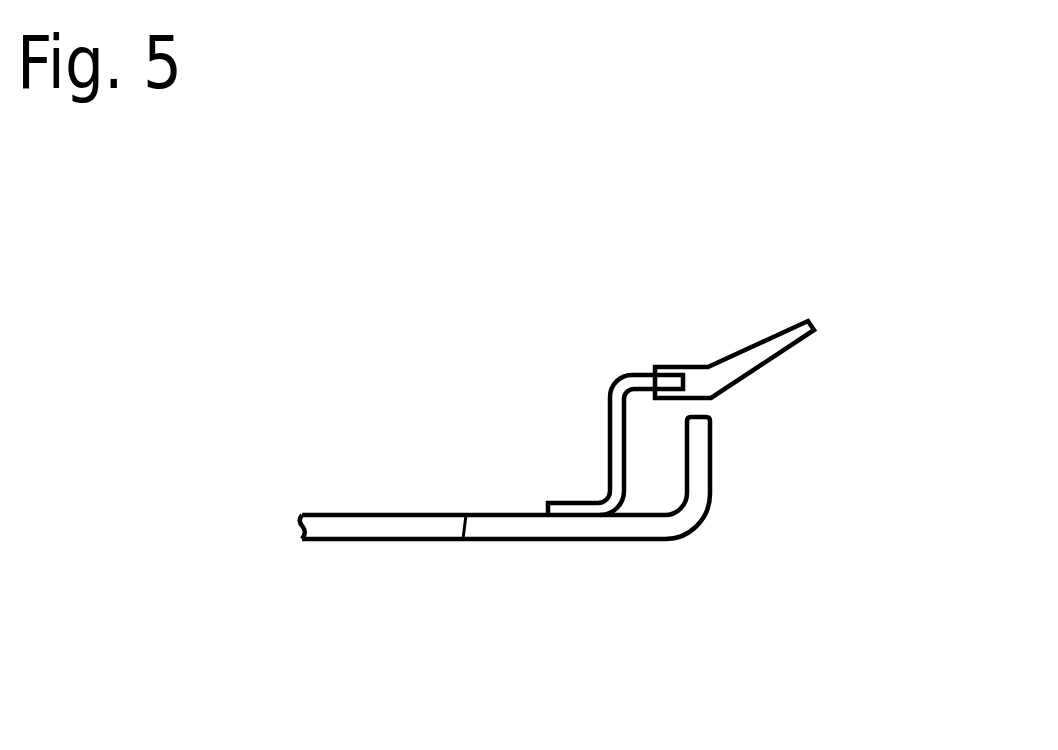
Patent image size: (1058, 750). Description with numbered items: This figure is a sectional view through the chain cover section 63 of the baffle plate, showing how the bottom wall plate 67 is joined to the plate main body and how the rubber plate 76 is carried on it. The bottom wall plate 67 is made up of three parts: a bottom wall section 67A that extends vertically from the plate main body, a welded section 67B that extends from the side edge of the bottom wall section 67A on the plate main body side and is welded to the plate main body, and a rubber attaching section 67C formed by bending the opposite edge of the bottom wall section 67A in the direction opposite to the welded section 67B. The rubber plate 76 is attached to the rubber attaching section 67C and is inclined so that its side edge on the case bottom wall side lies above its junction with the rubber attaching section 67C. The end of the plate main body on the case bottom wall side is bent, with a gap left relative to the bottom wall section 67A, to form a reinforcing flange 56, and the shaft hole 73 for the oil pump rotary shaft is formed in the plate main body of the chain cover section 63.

The reinforcing flange 56 is at (698, 477).
The chain cover section 63 is at (545, 539).
The bottom wall plate 67 is at (548, 339).
The bottom wall section 67A is at (608, 430).
The welded section 67B is at (567, 502).
The rubber attaching section 67C is at (662, 380).
The shaft hole 73 is at (464, 539).
The rubber plate 76 is at (750, 358).